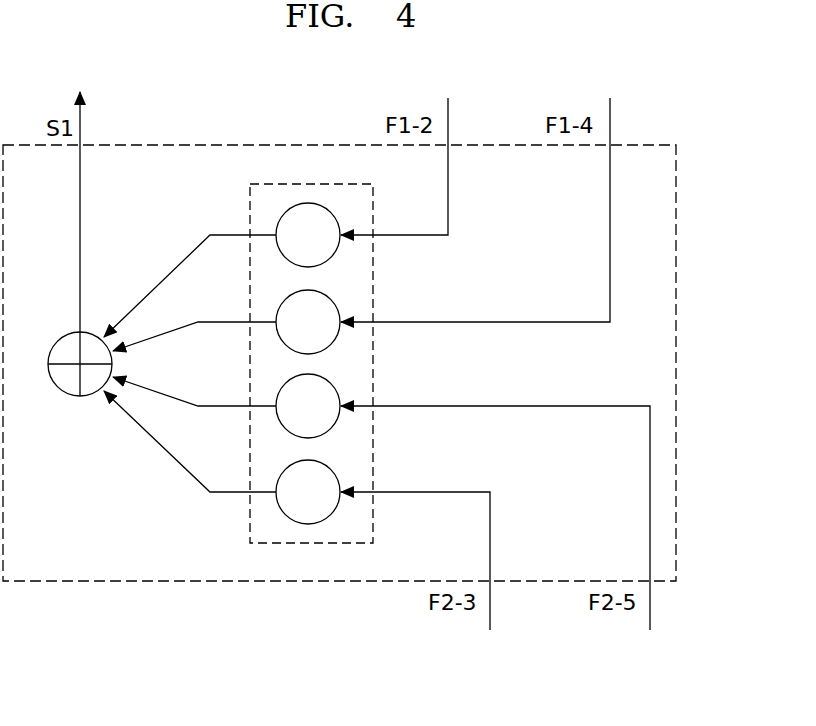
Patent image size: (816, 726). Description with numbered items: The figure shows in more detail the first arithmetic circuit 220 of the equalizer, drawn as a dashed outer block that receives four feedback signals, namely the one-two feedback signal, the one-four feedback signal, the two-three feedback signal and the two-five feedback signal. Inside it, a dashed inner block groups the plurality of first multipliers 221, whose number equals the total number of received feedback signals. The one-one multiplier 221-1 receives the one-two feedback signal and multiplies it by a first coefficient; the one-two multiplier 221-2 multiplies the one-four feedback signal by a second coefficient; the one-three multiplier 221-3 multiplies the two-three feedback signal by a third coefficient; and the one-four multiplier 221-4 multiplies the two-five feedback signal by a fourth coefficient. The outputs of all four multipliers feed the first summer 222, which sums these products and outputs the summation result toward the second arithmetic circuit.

The first arithmetic circuit 220 is at (676, 167).
The plurality of first multipliers 221 is at (374, 208).
The 1-1 multiplier 221-1 is at (332, 255).
The 1-2 multiplier 221-2 is at (332, 342).
The 1-3 multiplier 221-3 is at (332, 426).
The 1-4 multiplier 221-4 is at (332, 512).
The first summer 222 is at (62, 337).